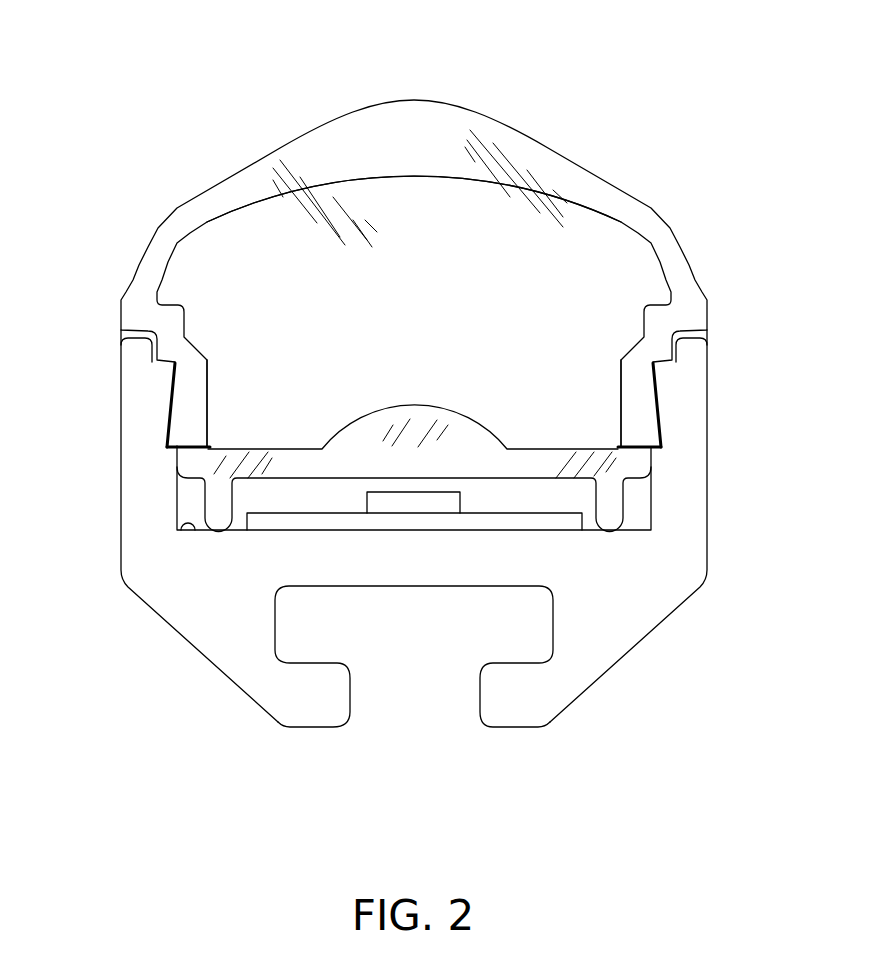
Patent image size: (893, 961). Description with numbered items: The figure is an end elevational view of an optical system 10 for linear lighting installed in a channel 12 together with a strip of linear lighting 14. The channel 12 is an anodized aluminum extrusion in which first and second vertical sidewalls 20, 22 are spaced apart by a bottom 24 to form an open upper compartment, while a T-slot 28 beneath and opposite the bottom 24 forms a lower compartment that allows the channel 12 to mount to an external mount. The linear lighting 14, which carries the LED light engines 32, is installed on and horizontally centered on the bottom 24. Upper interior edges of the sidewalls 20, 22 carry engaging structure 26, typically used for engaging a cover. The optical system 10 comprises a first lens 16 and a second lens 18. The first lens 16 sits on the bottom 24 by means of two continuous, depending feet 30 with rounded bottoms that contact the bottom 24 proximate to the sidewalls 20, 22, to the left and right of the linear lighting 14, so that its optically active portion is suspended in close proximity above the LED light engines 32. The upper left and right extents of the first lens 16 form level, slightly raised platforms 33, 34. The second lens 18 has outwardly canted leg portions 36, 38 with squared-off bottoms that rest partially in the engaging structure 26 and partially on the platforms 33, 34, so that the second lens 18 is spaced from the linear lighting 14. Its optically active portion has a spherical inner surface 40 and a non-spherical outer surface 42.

The optical system 10 is at (220, 161).
The channel 12 is at (112, 485).
The linear lighting 14 is at (319, 504).
The first lens 16 is at (418, 397).
The second lens 18 is at (472, 97).
The first vertical sidewall 20 is at (137, 415).
The second vertical sidewall 22 is at (690, 443).
The bottom 24 is at (181, 531).
The engaging structure 26 is at (146, 350).
The T-slot 28 is at (430, 670).
The feet 30 is at (214, 507).
The LED light engines 32 is at (400, 508).
The platform 33 is at (197, 446).
The platform 34 is at (630, 447).
The leg portion 36 is at (200, 380).
The leg portion 38 is at (628, 380).
The inner surface 40 is at (380, 268).
The outer surface 42 is at (309, 127).